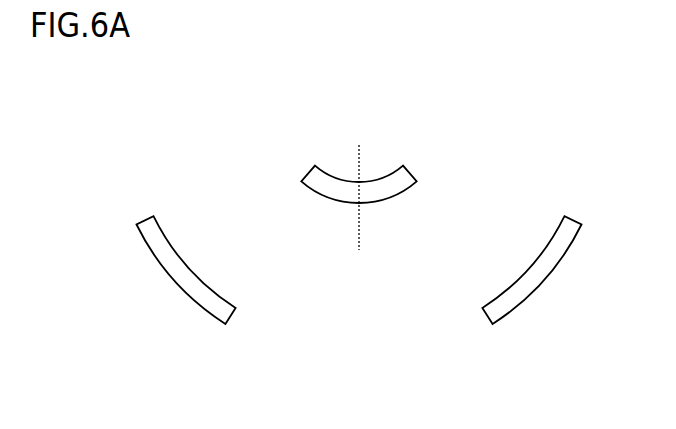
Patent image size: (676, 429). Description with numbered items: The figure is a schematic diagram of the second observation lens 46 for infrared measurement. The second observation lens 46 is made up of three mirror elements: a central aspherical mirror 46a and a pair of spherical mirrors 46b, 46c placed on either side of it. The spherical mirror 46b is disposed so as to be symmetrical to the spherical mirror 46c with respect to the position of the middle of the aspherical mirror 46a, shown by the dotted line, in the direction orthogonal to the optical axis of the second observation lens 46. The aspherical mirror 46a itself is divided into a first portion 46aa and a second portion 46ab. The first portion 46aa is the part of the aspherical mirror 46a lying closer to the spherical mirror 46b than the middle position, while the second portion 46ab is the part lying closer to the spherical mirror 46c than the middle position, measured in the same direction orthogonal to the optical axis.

The second observation lens for infrared measurement 46 is at (359, 272).
The aspherical mirror 46a is at (366, 250).
The first portion 46aa is at (396, 183).
The second portion 46ab is at (327, 183).
The spherical mirror 46b is at (531, 286).
The spherical mirror 46c is at (176, 262).